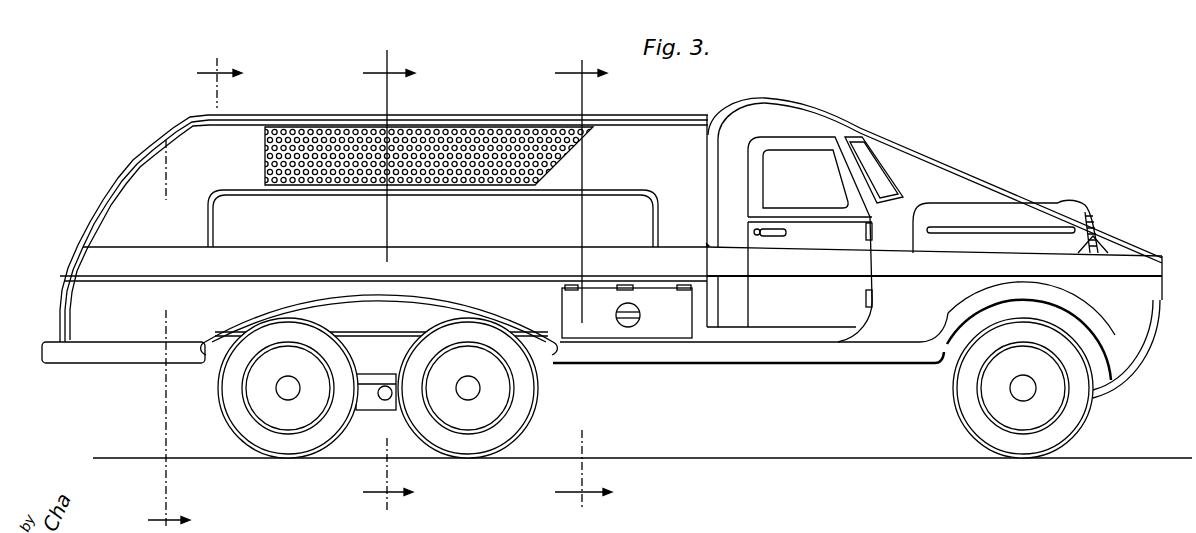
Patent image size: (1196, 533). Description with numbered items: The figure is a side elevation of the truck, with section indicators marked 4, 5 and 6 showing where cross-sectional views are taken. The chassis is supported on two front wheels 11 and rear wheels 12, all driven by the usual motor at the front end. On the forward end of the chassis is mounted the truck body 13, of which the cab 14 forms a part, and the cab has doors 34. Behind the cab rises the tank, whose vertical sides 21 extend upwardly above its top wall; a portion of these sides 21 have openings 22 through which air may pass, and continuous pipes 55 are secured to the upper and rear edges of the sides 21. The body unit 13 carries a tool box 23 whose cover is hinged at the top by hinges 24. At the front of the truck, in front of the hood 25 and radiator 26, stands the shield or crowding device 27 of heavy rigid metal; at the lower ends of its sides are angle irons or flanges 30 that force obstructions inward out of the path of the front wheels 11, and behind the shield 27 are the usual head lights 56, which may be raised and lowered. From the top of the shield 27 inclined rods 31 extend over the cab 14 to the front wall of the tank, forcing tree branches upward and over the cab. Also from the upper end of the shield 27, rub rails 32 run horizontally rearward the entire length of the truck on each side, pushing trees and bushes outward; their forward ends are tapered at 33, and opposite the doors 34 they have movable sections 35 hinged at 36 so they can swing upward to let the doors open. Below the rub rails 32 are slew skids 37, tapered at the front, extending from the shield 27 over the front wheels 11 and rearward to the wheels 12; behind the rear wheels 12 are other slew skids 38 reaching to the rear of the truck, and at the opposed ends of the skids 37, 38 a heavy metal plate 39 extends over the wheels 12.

The section line 4- 4 is at (583, 285).
The section line 5- 5 is at (389, 279).
The section line 6- 6 is at (195, 285).
The front wheels 11 is at (968, 413).
The rear wheels 12 is at (298, 460).
The truck body 13 is at (730, 322).
The cab 14 is at (795, 126).
The vertical sides 21 is at (232, 131).
The openings 22 is at (302, 125).
The tool box 23 is at (606, 331).
The hinges 24 is at (632, 284).
The hood 25 is at (985, 211).
The radiator 26 is at (1099, 225).
The shield 27 is at (1175, 278).
The angle irons 30 is at (1121, 362).
The inclined rods 31 is at (934, 161).
The rub rails 32 is at (541, 248).
The tapered forward ends 33 is at (1080, 269).
The doors 34 is at (848, 141).
The movable sections 35 is at (788, 268).
The hinges 36 is at (704, 245).
The slew skids 37 is at (842, 364).
The slew skids 38 is at (116, 364).
The heavy metal plate 39 is at (372, 305).
The continuous pipes 55 is at (470, 119).
The head lights 56 is at (1101, 248).